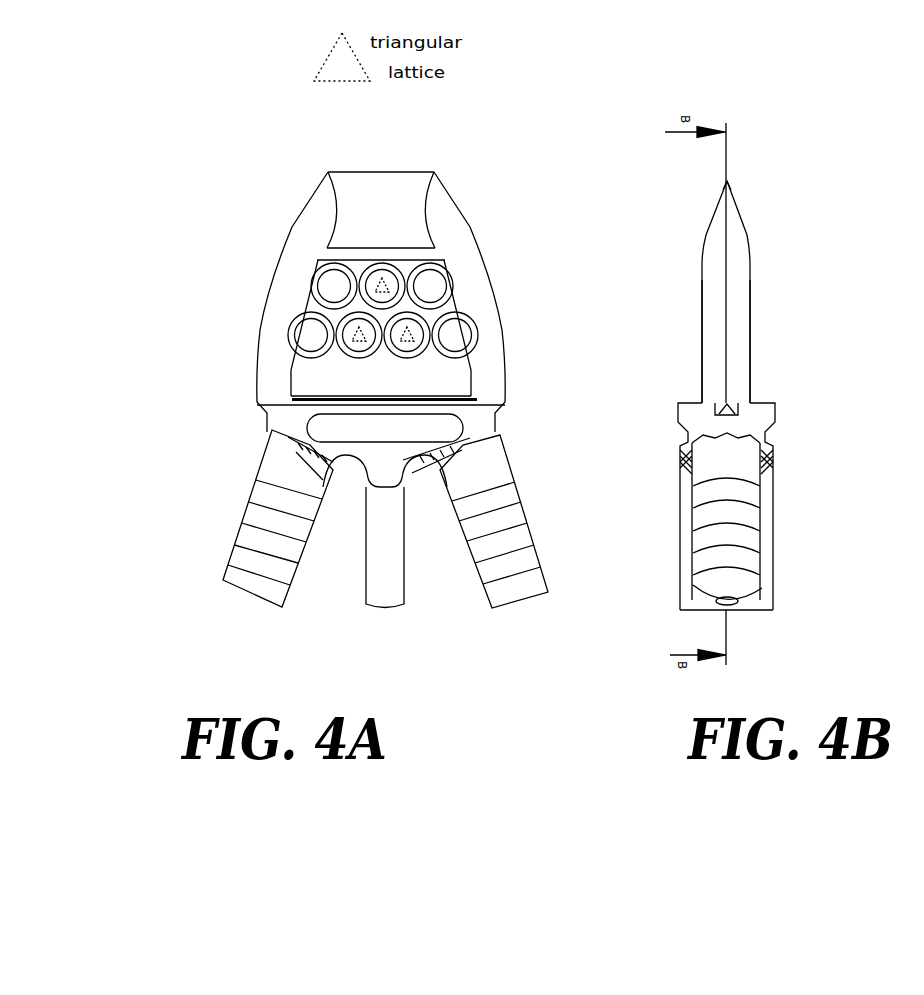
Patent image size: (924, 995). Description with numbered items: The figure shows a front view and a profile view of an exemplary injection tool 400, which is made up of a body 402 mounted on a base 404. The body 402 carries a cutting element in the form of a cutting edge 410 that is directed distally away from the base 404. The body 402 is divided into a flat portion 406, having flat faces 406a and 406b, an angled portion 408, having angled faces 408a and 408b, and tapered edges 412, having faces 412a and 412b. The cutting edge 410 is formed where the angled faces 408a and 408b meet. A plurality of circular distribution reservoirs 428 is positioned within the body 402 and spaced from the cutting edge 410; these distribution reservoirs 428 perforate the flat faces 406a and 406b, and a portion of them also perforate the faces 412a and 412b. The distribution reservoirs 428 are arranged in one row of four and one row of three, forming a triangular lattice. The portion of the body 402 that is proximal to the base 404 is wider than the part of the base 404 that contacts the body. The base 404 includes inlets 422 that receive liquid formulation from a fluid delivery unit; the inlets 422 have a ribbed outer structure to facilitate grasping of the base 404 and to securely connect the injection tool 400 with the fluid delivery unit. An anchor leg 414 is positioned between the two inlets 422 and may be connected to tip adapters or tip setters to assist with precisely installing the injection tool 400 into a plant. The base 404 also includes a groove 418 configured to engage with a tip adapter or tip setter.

In FIG. 4A, the injection tool 400 is at (228, 108).
In FIG. 4B, the injection tool 400 is at (632, 108).
In FIG. 4A, the body 402 is at (176, 177).
In FIG. 4A, the base 404 is at (176, 417).
In FIG. 4B, the flat portion 406 is at (852, 285).
In FIG. 4A, the flat face 406a is at (373, 387).
In FIG. 4B, the flat face 406a is at (695, 373).
In FIG. 4B, the flat face 406b is at (759, 373).
In FIG. 4B, the angled portion 408 is at (852, 195).
In FIG. 4A, the angled face 408a is at (373, 222).
In FIG. 4B, the angled face 408a is at (704, 225).
In FIG. 4B, the angled face 408b is at (749, 225).
In FIG. 4A, the cutting edge 410 is at (376, 169).
In FIG. 4B, the cutting edge 410 is at (731, 182).
In FIG. 4A, the tapered edges 412 is at (278, 253).
In FIG. 4B, the tapered edges 412 is at (727, 266).
In FIG. 4A, the face 412a is at (280, 298).
In FIG. 4B, the face 412a is at (718, 292).
In FIG. 4B, the face 412b is at (737, 292).
In FIG. 4A, the anchor leg 414 is at (387, 572).
In FIG. 4B, the anchor leg 414 is at (765, 586).
In FIG. 4A, the groove 418 is at (390, 430).
In FIG. 4B, the inlets 422 is at (738, 616).
In FIG. 4A, the distribution reservoirs 428 is at (702, 333).